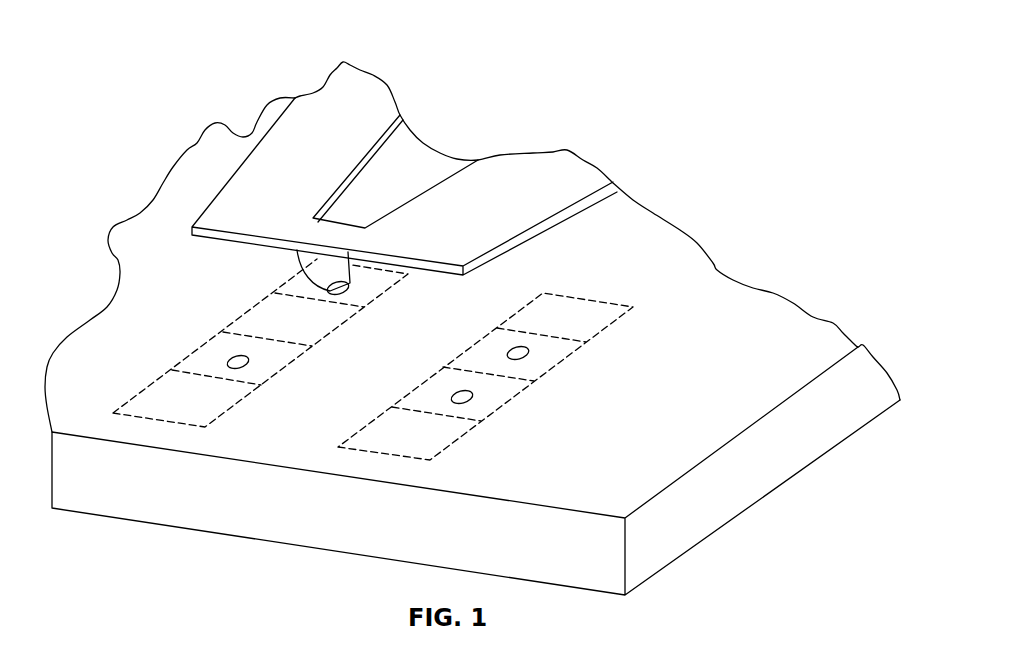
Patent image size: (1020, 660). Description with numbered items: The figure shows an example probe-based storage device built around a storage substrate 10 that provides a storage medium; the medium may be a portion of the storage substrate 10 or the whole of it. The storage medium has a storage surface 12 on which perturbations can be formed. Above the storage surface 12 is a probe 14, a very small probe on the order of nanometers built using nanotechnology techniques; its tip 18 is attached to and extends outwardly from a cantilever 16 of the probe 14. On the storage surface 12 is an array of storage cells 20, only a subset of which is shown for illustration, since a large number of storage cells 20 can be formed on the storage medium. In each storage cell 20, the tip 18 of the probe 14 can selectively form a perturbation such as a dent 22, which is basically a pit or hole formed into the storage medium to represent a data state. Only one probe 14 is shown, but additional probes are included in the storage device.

The storage substrate 10 is at (472, 328).
The storage surface 12 is at (813, 338).
The probe 14 is at (422, 189).
The cantilever 16 is at (260, 177).
The tip 18 is at (333, 275).
The storage cells 20 is at (228, 410).
The dent 22 is at (240, 368).